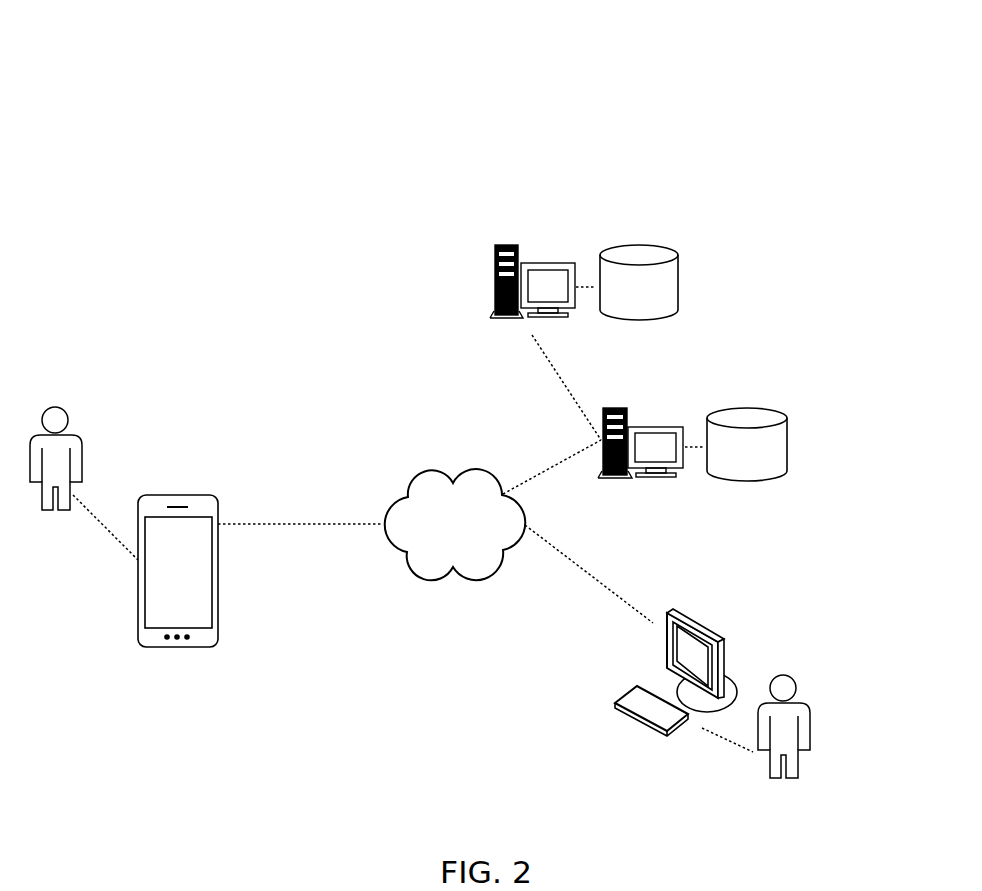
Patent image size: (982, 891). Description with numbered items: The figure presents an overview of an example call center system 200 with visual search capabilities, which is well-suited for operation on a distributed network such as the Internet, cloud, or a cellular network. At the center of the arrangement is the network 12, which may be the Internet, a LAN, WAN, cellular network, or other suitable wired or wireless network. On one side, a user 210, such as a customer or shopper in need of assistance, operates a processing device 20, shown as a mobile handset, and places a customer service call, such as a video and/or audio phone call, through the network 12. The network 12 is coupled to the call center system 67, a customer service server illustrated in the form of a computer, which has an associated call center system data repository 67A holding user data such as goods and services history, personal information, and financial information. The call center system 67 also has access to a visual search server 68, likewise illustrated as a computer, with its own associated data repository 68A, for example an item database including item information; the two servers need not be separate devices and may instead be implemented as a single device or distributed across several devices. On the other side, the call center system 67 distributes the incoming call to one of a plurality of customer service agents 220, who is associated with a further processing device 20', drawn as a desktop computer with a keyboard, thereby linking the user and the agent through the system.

The call center system 200 is at (826, 81).
The network 12 is at (435, 468).
The processing device 20 is at (213, 571).
The processing device 20' is at (702, 662).
The user 210 is at (82, 448).
The customer service agents 220 is at (810, 735).
The visual search server 68 is at (548, 262).
The data repository 68A is at (678, 285).
The call center system 67 is at (625, 408).
The call center system data repository 67A is at (788, 425).